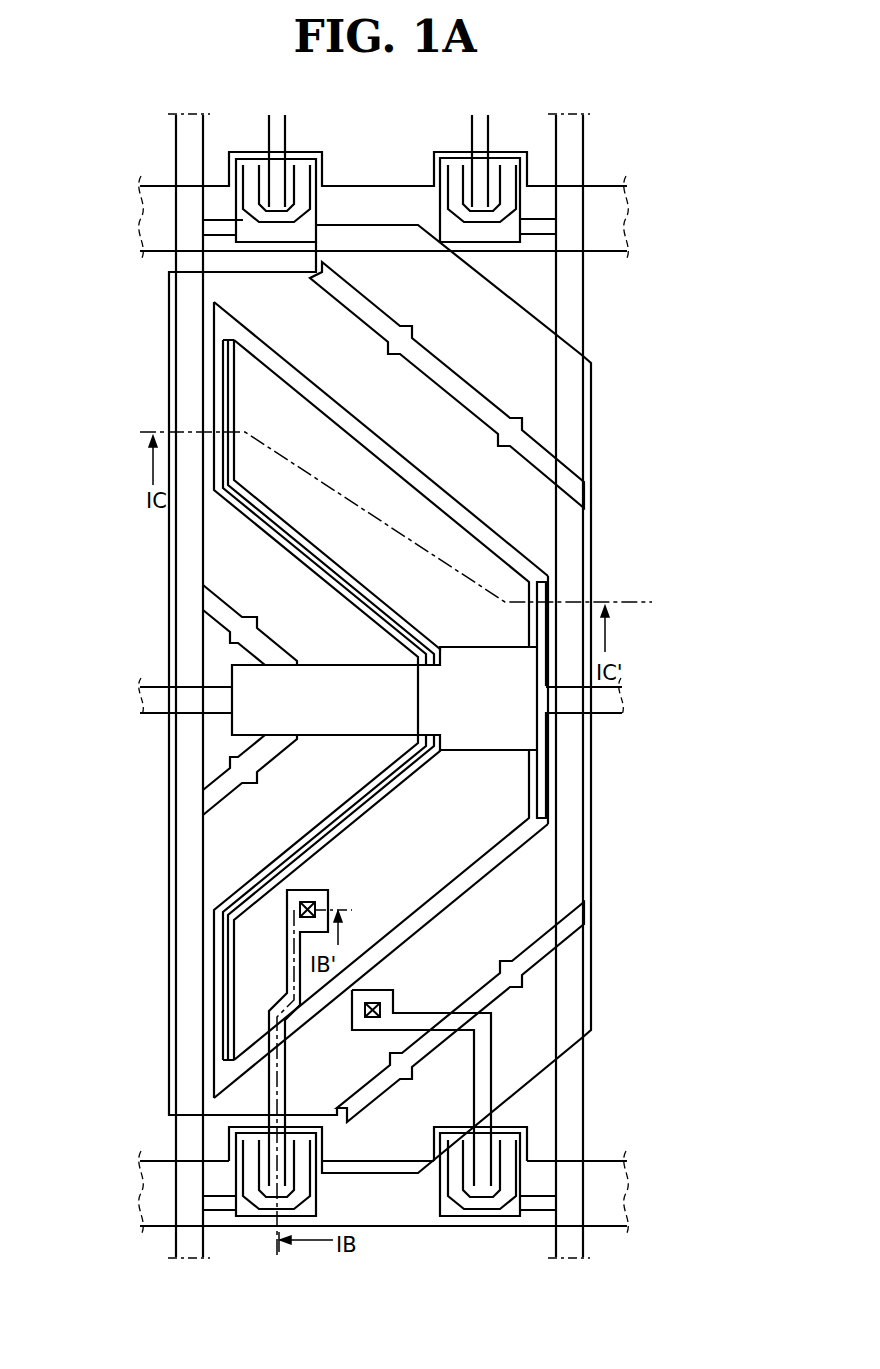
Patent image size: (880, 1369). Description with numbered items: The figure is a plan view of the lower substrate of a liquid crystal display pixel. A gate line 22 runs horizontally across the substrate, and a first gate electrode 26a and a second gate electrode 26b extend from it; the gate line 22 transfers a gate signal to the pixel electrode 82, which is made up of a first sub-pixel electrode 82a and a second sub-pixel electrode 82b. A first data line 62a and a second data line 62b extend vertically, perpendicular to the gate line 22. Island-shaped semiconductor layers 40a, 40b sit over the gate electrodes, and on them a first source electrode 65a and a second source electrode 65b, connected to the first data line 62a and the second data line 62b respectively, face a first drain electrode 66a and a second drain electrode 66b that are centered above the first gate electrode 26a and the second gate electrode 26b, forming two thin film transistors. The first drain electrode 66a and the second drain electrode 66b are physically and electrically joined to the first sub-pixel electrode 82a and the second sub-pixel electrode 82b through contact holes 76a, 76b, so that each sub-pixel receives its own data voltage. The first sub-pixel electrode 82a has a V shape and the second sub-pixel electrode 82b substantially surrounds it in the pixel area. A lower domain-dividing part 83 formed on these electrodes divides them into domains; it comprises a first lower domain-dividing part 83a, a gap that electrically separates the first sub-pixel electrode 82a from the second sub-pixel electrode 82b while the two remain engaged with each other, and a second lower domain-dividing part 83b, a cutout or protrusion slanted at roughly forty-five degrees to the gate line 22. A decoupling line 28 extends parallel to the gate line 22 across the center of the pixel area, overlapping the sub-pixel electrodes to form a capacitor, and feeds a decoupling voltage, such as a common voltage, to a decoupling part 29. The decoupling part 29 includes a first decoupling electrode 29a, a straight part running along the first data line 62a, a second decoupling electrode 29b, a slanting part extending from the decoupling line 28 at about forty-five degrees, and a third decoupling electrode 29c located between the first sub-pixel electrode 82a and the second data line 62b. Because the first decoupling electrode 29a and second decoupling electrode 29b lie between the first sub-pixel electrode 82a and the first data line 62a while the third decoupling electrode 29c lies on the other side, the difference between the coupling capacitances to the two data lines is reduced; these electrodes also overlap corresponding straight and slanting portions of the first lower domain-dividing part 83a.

The gate line 22 is at (593, 1161).
The first gate electrode 26a is at (305, 1127).
The second gate electrode 26b is at (448, 1127).
The decoupling line 28 is at (605, 703).
The decoupling part 29 is at (284, 700).
The first decoupling electrode 29a is at (214, 380).
The second decoupling electrode 29b is at (234, 525).
The third decoupling electrode 29c is at (188, 700).
The semiconductor layer 40a is at (253, 1216).
The semiconductor layer 40b is at (460, 1216).
The first data line 62a is at (174, 152).
The second data line 62b is at (585, 152).
The first source electrode 65a is at (312, 1180).
The second source electrode 65b is at (493, 1210).
The first drain electrode 66a is at (288, 958).
The second drain electrode 66b is at (491, 1062).
The contact hole 76a is at (298, 910).
The contact hole 76b is at (394, 992).
The pixel electrode 82 is at (460, 699).
The first sub-pixel electrode 82a is at (520, 830).
The second sub-pixel electrode 82b is at (591, 880).
The lower domain-dividing part 83 is at (489, 419).
The first lower domain-dividing part 83a is at (477, 515).
The second lower domain-dividing part 83b is at (533, 430).